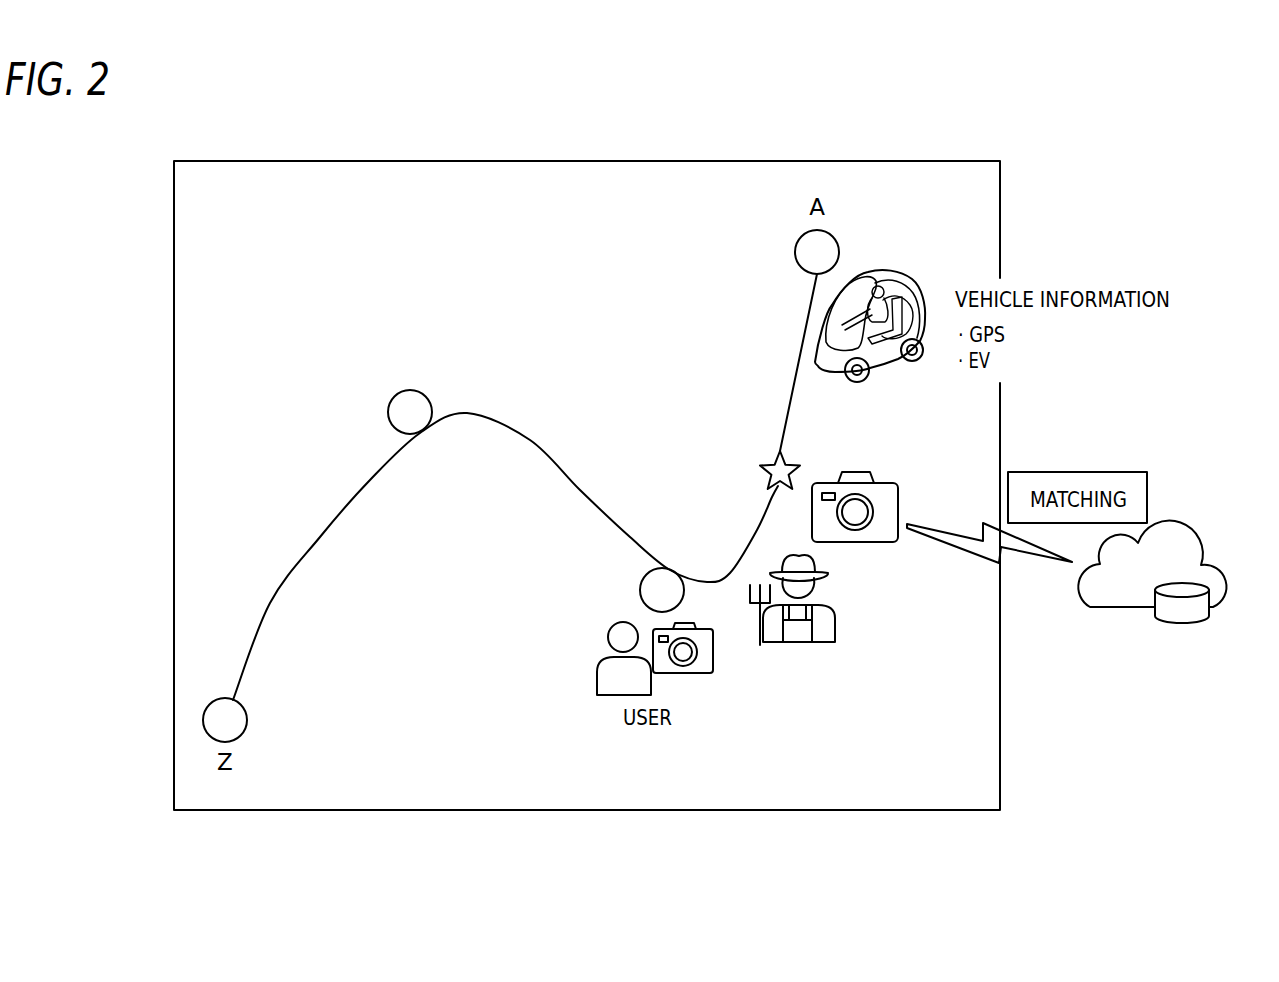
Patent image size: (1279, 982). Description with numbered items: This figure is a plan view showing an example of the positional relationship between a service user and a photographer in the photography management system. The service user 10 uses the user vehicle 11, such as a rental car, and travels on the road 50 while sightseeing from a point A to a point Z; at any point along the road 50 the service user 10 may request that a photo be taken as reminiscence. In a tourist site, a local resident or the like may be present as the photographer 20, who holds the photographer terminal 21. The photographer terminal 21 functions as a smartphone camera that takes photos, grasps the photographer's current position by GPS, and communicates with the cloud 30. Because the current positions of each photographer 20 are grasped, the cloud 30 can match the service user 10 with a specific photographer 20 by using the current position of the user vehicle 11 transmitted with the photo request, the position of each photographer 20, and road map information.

The service user 10 is at (925, 297).
The user vehicle 11 is at (860, 300).
The photographer 20 is at (828, 610).
The photographer terminal 21 is at (852, 470).
The cloud 30 is at (1183, 527).
The road 50 is at (532, 438).